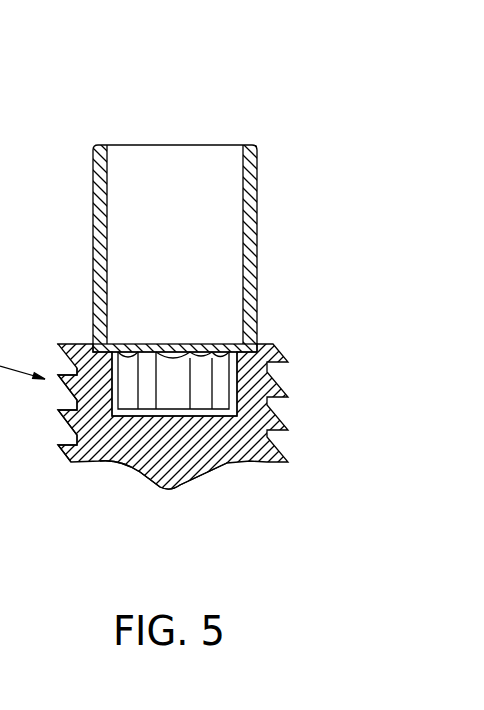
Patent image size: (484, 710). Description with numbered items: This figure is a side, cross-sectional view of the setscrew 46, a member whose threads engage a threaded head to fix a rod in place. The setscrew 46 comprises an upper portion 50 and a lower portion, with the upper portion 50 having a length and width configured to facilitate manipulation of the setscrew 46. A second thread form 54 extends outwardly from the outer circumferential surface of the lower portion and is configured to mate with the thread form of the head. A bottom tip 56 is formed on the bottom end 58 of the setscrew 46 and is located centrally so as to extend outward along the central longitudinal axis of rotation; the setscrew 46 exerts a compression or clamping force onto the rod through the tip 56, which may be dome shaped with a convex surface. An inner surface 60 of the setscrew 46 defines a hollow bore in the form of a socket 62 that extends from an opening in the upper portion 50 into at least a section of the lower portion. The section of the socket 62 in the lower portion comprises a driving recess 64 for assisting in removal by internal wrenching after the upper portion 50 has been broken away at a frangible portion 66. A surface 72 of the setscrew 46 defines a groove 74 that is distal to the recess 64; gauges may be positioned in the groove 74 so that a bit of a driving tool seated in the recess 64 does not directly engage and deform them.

The setscrew 46 is at (274, 252).
The upper portion 50 is at (73, 220).
The second thread form 54 is at (286, 404).
The bottom tip 56 is at (183, 485).
The bottom end 58 is at (84, 463).
The inner surface 60 is at (108, 190).
The socket 62 is at (184, 212).
The driving recess 64 is at (178, 387).
The frangible portion 66 is at (90, 336).
The surface 72 is at (200, 413).
The groove 74 is at (152, 433).